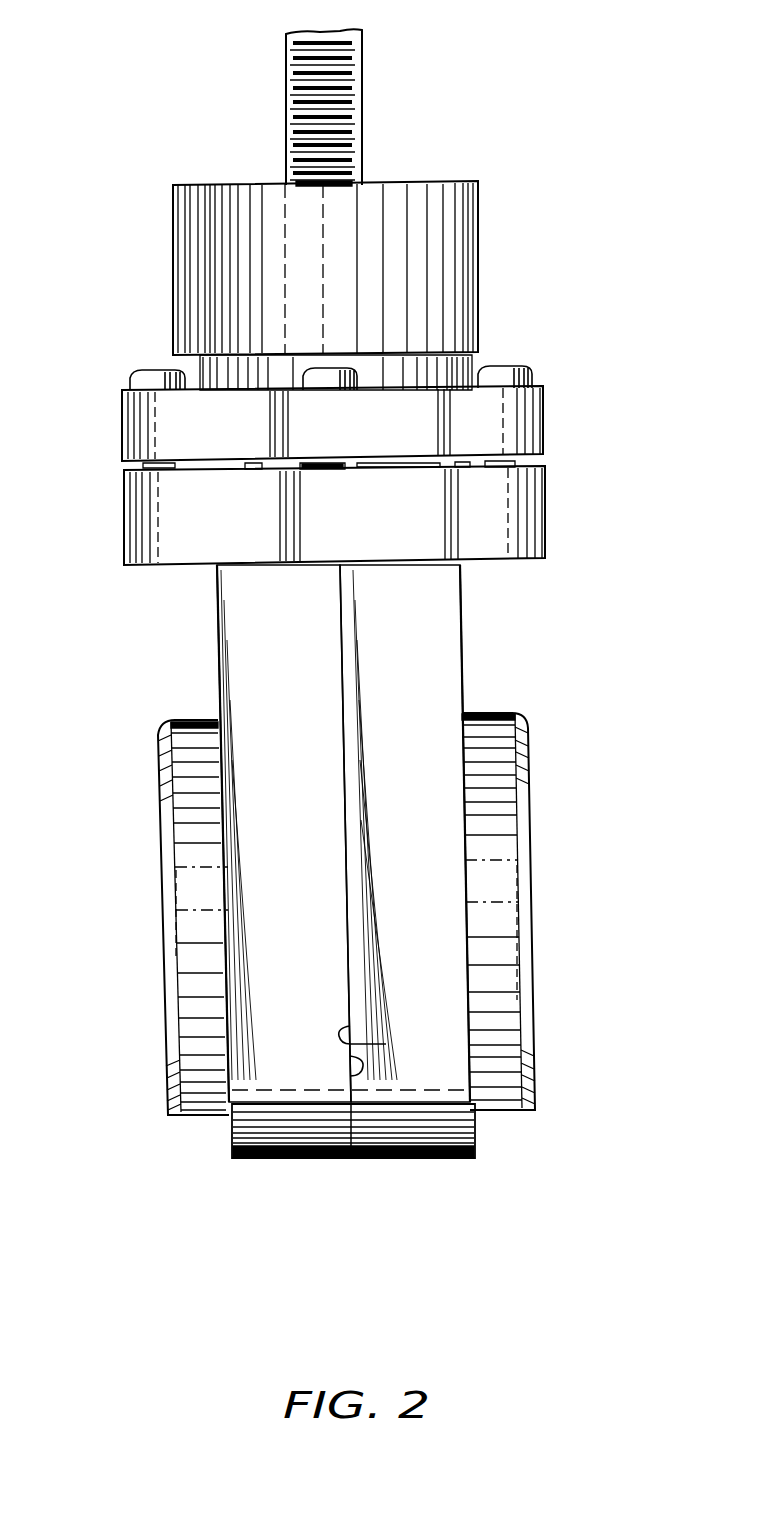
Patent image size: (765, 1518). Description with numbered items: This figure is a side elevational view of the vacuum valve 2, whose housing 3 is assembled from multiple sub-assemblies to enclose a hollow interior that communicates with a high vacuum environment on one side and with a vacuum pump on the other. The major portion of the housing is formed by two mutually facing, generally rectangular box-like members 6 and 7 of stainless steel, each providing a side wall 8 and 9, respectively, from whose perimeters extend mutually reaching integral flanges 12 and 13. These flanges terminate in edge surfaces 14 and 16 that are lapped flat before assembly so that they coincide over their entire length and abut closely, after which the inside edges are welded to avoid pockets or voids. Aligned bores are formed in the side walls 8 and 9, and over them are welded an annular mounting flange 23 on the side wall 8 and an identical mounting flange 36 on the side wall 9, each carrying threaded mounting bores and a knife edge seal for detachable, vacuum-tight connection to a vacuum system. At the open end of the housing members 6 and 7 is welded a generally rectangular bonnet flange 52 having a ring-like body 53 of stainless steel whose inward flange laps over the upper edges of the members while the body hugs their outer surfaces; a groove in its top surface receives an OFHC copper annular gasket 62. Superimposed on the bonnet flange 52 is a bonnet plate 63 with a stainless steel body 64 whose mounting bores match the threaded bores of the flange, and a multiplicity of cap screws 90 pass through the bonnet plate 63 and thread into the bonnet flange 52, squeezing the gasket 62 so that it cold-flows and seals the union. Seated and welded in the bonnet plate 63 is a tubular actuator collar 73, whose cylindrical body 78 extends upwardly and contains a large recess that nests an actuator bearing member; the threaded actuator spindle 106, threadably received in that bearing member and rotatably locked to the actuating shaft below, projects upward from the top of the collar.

The vacuum valve 2 is at (518, 247).
The threaded actuator spindle 106 is at (362, 123).
The actuator collar 73 is at (168, 266).
The cylindrical body 78 is at (478, 222).
The cap screws 90 is at (143, 380).
The bonnet plate 63 is at (119, 428).
The body 64 is at (537, 428).
The annular gasket 62 is at (230, 470).
The bonnet flange 52 is at (121, 516).
The ring-like body 53 is at (522, 516).
The housing 3 is at (540, 699).
The box-like member 6 is at (207, 612).
The box-like member 7 is at (483, 638).
The side wall 8 is at (218, 666).
The side wall 9 is at (462, 692).
The integral flange 12 is at (300, 998).
The integral flange 13 is at (425, 998).
The edge surface 14 is at (352, 1072).
The edge surface 16 is at (384, 1038).
The annular mounting flange 23 is at (212, 1115).
The mounting flange 36 is at (505, 1113).